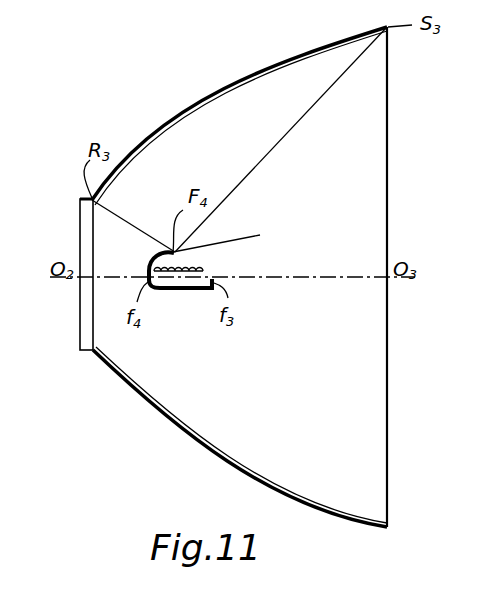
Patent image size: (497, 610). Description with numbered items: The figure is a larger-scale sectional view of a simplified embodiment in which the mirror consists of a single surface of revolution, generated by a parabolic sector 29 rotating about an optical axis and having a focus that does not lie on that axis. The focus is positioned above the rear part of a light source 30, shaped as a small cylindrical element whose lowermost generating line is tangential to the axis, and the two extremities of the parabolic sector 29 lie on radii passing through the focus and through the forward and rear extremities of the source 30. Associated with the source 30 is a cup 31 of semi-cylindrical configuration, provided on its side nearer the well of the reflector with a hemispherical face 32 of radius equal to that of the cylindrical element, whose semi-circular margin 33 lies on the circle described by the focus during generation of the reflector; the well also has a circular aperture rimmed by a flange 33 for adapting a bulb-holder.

The parabolic sector 29 is at (250, 77).
The light source 30 is at (204, 267).
The cup 31 is at (193, 290).
The hemispherical face 32 is at (151, 263).
The semi-circular margin 33 is at (84, 218).